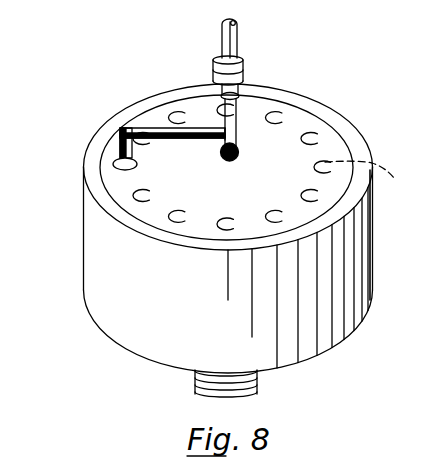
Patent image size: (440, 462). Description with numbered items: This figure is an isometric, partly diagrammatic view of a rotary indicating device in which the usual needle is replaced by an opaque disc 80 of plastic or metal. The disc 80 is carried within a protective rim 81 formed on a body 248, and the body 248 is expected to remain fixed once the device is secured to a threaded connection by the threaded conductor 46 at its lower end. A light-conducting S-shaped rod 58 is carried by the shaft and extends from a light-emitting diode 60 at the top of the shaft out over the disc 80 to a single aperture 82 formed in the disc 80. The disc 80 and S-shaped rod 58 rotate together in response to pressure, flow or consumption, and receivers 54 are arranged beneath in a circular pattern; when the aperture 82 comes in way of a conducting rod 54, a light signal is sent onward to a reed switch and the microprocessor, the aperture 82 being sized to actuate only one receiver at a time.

The threaded conductor 46 is at (257, 383).
The conducting rod 54 is at (365, 184).
The S-shaped rod 58 is at (153, 127).
The diode 60 is at (243, 68).
The opaque disc 80 is at (336, 184).
The protective rim 81 is at (337, 119).
The aperture 82 is at (120, 158).
The body 248 is at (92, 227).